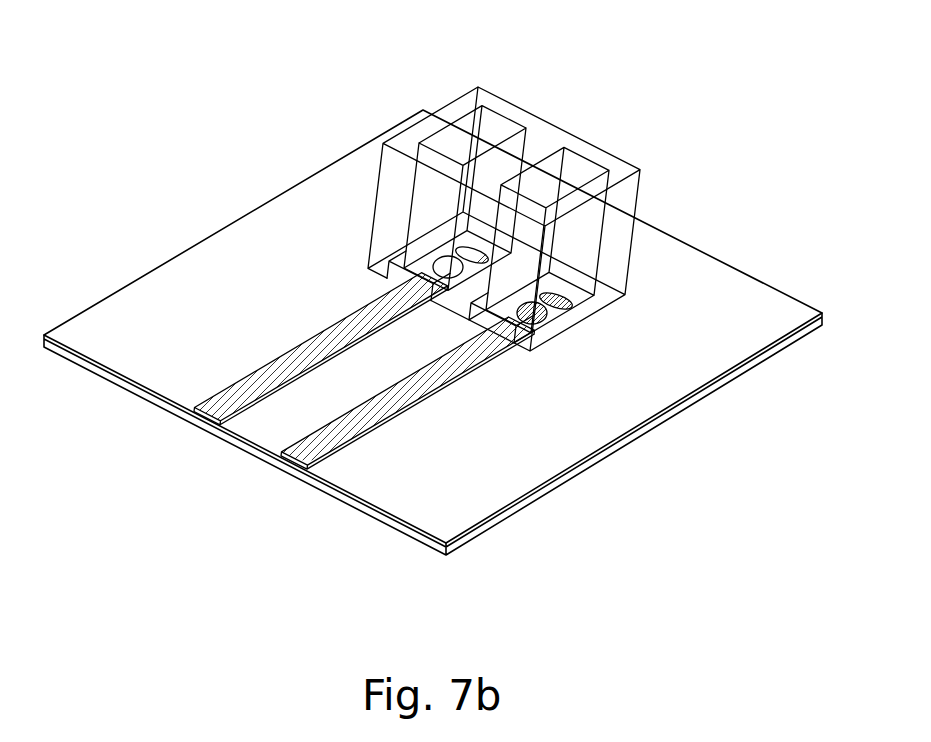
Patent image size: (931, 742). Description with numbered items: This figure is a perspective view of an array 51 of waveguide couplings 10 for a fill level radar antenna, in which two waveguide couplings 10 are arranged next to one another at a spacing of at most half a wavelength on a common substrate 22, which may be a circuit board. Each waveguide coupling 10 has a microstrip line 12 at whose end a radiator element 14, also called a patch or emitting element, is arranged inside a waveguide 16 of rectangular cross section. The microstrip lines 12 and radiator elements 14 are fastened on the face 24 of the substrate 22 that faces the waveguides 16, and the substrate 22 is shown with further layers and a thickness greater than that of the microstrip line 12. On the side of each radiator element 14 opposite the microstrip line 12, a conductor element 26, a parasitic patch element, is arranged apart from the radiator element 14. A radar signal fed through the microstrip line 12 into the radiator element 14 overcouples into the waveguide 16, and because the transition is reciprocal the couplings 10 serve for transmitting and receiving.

The waveguide coupling 10 is at (523, 82).
The microstrip line 12 is at (198, 420).
The radiator element 14 is at (555, 337).
The waveguide 16 is at (644, 262).
The substrate 22 is at (742, 380).
The face 24 is at (752, 295).
The conductor element 26 is at (597, 302).
The array 51 is at (437, 287).